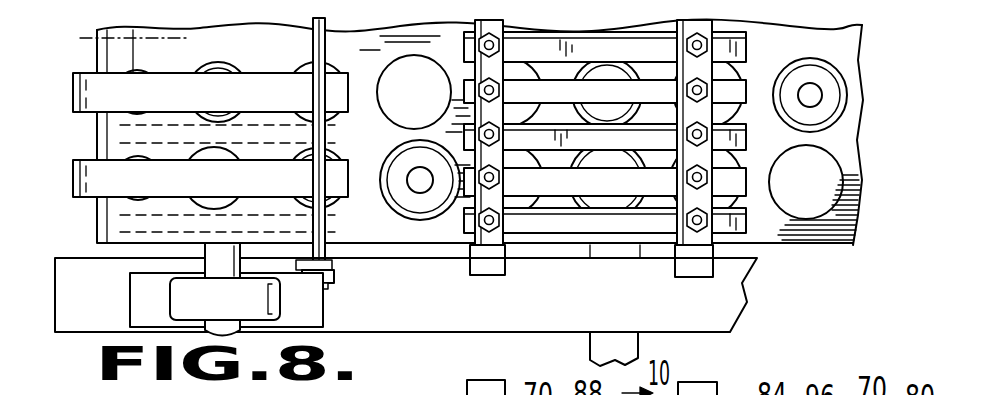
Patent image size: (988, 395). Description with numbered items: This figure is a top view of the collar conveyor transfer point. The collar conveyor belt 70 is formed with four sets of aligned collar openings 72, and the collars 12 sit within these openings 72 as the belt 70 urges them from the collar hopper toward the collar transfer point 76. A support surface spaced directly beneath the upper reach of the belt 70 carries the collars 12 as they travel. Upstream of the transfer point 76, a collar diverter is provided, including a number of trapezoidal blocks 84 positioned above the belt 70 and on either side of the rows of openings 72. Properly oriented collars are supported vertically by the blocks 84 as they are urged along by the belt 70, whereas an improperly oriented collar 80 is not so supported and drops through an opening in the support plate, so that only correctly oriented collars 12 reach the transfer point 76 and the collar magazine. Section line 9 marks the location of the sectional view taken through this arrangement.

The section line 9- 9 is at (72, 96).
The collar 12 is at (423, 200).
The collar conveyor belt 70 is at (858, 217).
The collar openings 72 is at (390, 207).
The collar transfer point 76 is at (81, 266).
The improperly oriented collar 80 is at (627, 110).
The trapezoidal blocks 84 is at (557, 110).